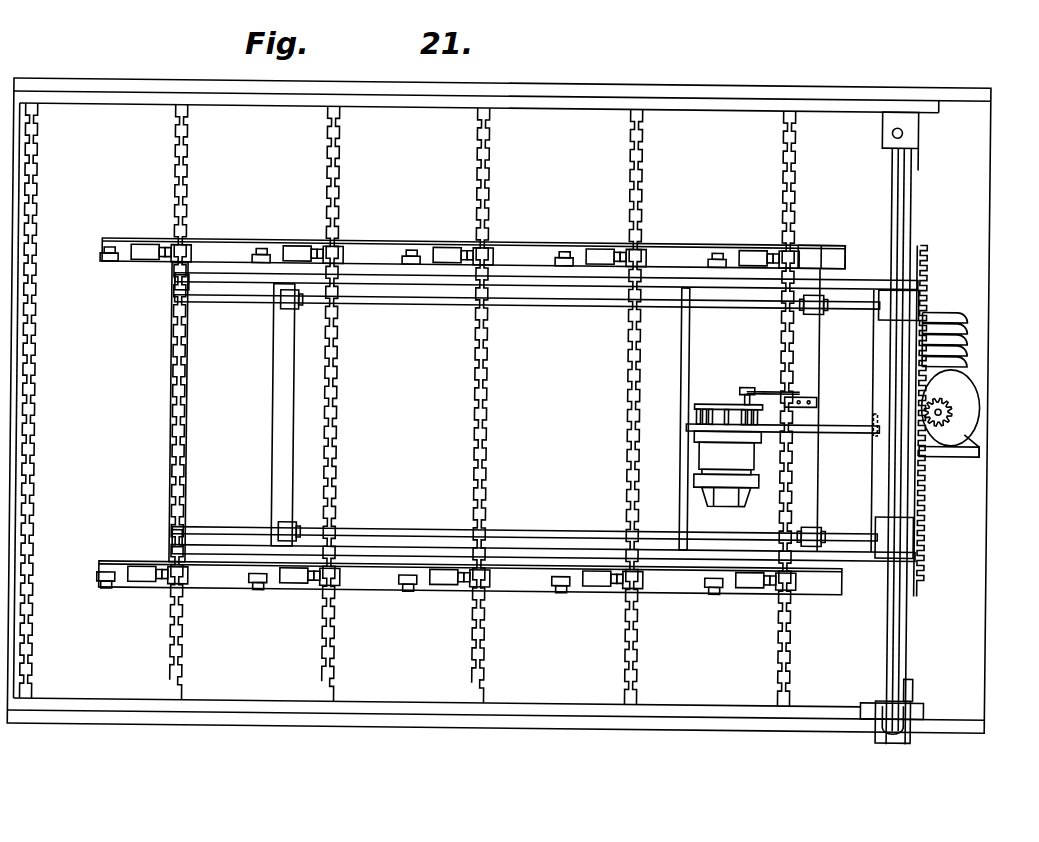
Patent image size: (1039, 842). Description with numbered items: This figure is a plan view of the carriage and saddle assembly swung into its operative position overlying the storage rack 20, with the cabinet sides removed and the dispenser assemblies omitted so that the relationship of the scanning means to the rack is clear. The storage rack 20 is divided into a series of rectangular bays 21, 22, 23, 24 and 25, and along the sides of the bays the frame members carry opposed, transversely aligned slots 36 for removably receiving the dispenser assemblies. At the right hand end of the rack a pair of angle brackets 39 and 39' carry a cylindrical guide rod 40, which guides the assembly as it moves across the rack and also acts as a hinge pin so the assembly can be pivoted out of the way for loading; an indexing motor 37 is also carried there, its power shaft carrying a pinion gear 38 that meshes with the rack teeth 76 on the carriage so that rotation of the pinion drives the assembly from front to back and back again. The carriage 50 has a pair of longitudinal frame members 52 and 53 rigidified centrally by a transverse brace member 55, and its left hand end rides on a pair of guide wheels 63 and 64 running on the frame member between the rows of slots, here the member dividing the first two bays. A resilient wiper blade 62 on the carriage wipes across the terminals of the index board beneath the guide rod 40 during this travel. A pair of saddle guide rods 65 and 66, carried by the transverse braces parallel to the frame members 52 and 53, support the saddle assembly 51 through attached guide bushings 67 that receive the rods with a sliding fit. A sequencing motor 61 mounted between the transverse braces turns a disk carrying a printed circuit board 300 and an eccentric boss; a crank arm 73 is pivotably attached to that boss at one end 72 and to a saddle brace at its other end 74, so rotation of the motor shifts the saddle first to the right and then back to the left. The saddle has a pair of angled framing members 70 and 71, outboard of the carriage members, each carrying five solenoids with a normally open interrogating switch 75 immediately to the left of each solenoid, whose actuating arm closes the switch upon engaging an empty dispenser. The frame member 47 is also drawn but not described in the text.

The storage rack 20 is at (737, 88).
The rectangular bay 21 is at (122, 442).
The rectangular bay 22 is at (252, 442).
The rectangular bay 23 is at (425, 443).
The rectangular bay 24 is at (577, 441).
The rectangular bay 25 is at (758, 326).
The opposed slots 36 is at (341, 390).
The indexing motor 37 is at (966, 316).
The pinion gear 38 is at (946, 414).
The angle bracket 39 is at (896, 739).
The angle bracket 39' is at (937, 132).
The cylindrical guide rod 40 is at (905, 185).
The top frame member 47 is at (588, 82).
The carriage 50 is at (838, 270).
The saddle assembly 51 is at (831, 239).
The longitudinal frame member 52 is at (198, 279).
The longitudinal frame member 53 is at (550, 543).
The transverse brace member 55 is at (684, 362).
The sequencing motor 61 is at (744, 459).
The resilient wiper blade 62 is at (878, 388).
The guide wheel 63 is at (177, 540).
The guide wheel 64 is at (173, 296).
The saddle guide rod 65 is at (402, 525).
The saddle guide rod 66 is at (415, 301).
The guide bushings 67 is at (287, 306).
The angled framing member 70 is at (515, 240).
The angled framing member 71 is at (545, 583).
The crank arm end 72 is at (745, 382).
The crank arm 73 is at (752, 383).
The crank arm end 74 is at (795, 382).
The interrogating switch 75 is at (111, 245).
The rack teeth 76 is at (925, 529).
The printed circuit board 300 is at (691, 416).